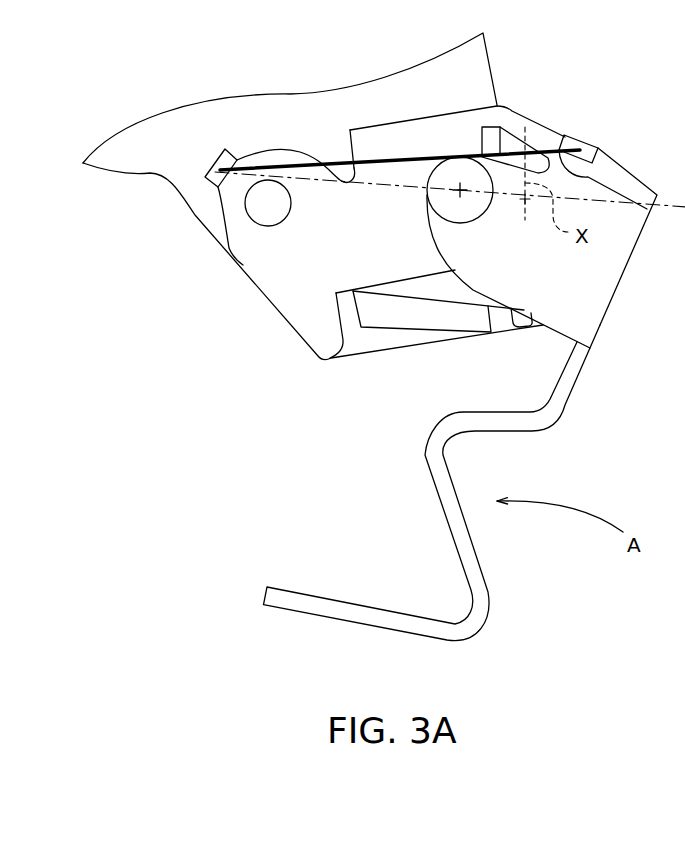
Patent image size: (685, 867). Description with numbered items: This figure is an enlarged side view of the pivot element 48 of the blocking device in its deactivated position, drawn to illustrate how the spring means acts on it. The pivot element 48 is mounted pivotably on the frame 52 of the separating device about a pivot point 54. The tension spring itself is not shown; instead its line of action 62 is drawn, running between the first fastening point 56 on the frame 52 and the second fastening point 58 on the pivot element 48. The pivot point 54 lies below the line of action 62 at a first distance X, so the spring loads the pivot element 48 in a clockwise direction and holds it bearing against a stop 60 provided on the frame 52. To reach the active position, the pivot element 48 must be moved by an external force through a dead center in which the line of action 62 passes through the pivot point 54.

The pivot element 48 is at (293, 600).
The frame 52 is at (288, 272).
The pivot point 54 is at (462, 202).
The first fastening point 56 is at (212, 151).
The second fastening point 58 is at (582, 130).
The stop 60 is at (538, 123).
The line of action 62 is at (373, 158).